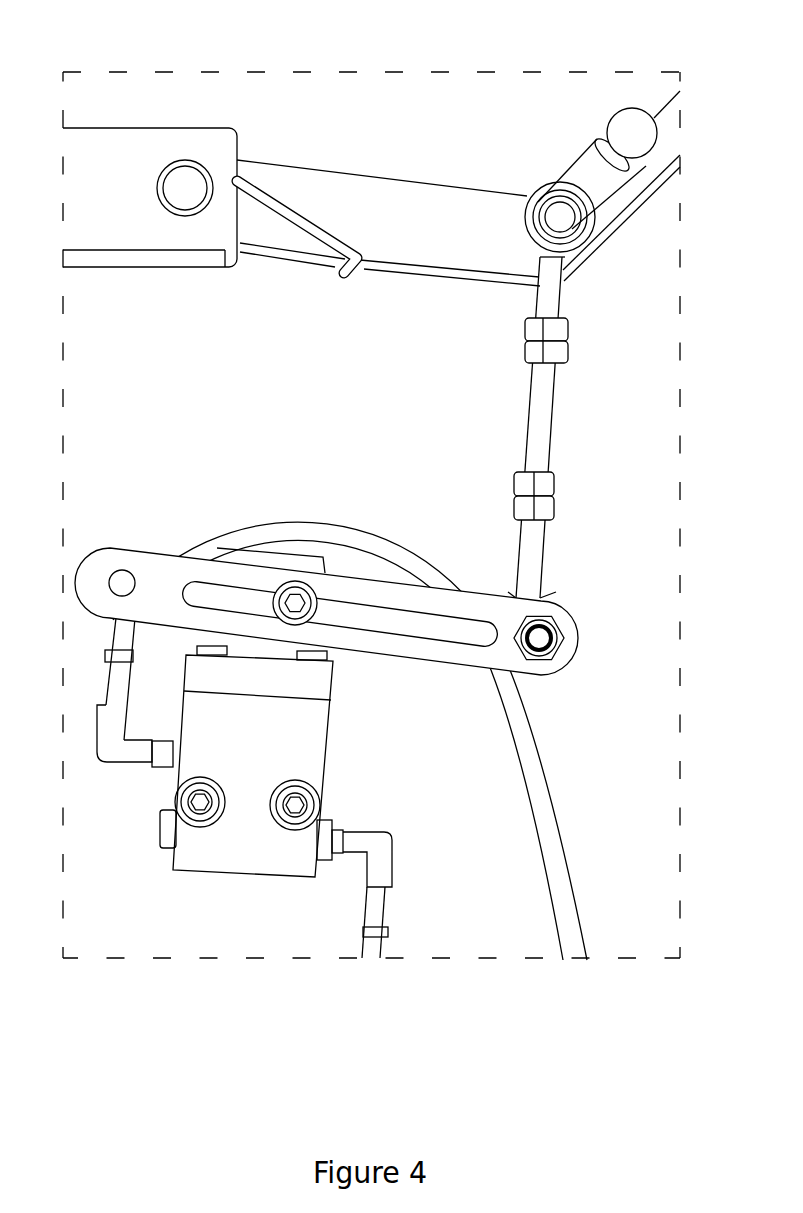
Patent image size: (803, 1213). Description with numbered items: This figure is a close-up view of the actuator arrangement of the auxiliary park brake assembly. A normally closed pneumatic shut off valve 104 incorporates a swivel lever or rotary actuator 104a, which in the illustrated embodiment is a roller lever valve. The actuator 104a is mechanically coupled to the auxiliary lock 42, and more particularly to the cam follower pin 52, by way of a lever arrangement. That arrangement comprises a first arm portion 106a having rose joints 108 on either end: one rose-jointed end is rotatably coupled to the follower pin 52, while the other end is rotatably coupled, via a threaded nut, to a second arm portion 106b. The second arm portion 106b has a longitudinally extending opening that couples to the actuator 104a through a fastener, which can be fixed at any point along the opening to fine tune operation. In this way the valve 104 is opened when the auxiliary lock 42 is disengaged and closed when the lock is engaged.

The auxiliary lock 42 is at (415, 202).
The cam follower pin 52 is at (618, 110).
The pneumatic shut off valve 104 is at (265, 802).
The actuator 104a is at (280, 570).
The first arm portion 106a is at (542, 437).
The second arm portion 106b is at (427, 587).
The rose joints 108 is at (530, 181).